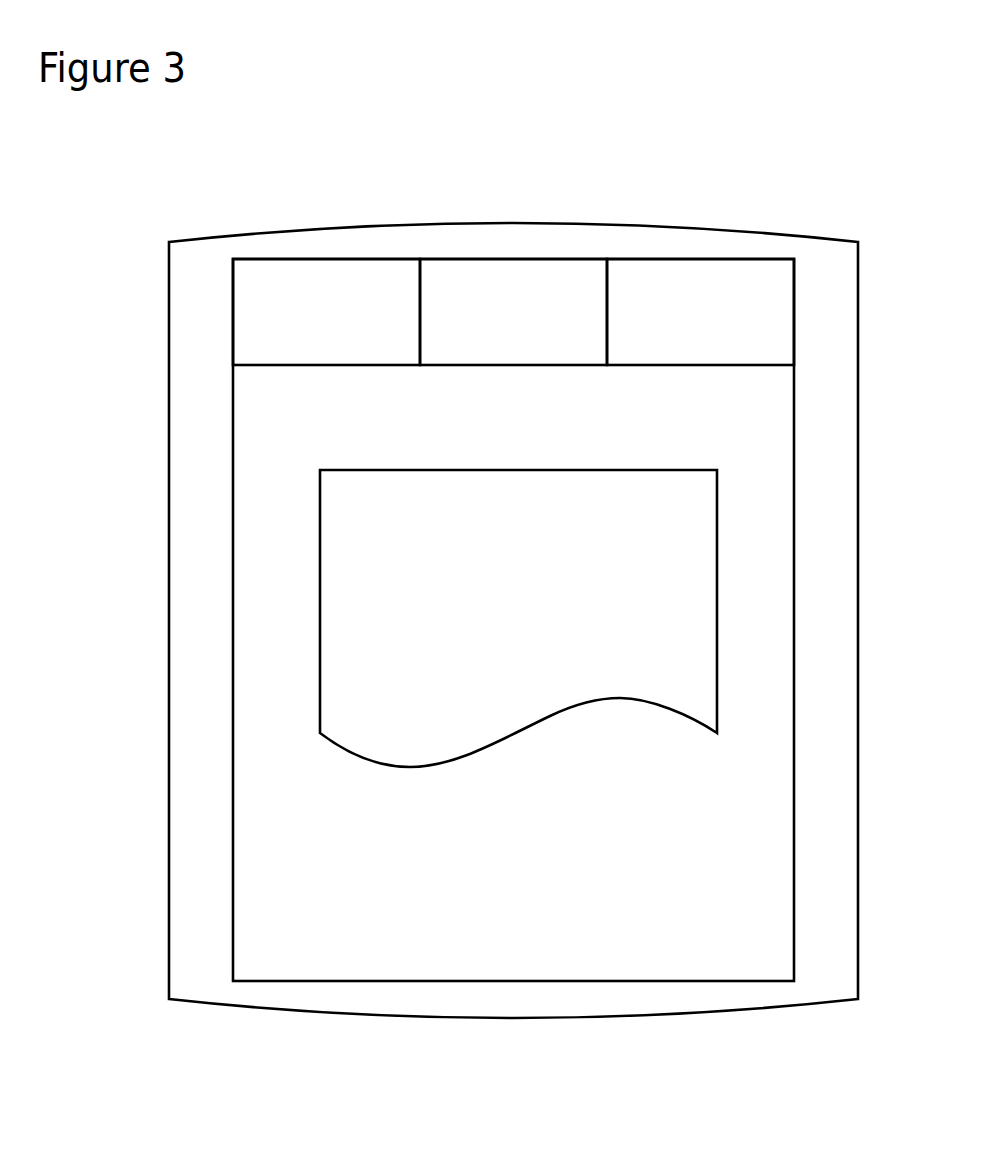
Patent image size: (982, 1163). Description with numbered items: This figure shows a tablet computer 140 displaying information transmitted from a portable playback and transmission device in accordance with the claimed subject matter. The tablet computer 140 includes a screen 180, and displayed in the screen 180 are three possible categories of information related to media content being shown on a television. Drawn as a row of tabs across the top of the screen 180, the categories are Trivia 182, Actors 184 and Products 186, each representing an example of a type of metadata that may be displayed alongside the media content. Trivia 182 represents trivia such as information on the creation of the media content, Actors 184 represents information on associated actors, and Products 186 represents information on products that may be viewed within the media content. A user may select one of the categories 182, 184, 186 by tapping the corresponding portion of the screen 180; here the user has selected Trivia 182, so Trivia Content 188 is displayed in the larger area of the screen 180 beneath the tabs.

The tablet computer 140 is at (492, 180).
The screen 180 is at (465, 983).
The Trivia category 182 is at (347, 340).
The Actors category 184 is at (495, 340).
The Products category 186 is at (685, 340).
The Trivia Content 188 is at (501, 645).